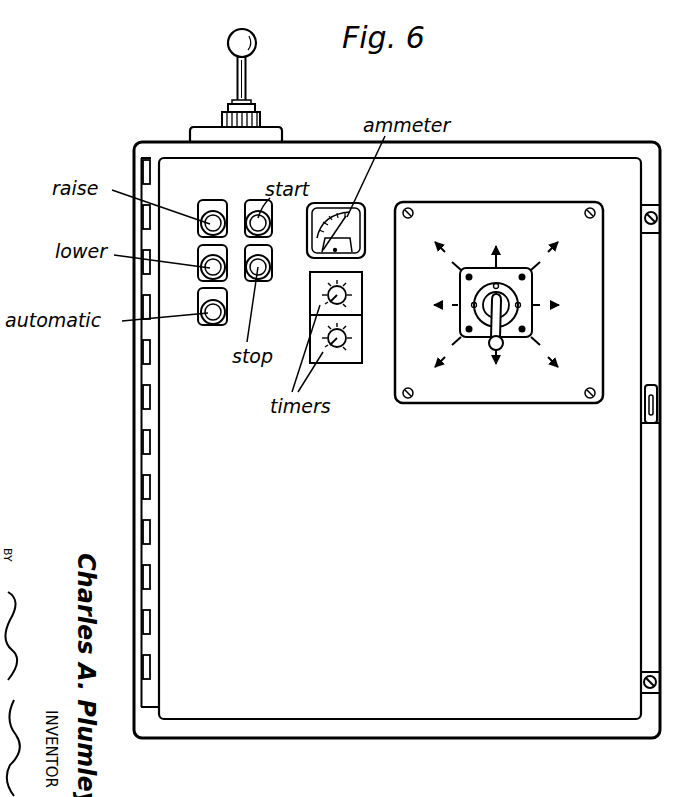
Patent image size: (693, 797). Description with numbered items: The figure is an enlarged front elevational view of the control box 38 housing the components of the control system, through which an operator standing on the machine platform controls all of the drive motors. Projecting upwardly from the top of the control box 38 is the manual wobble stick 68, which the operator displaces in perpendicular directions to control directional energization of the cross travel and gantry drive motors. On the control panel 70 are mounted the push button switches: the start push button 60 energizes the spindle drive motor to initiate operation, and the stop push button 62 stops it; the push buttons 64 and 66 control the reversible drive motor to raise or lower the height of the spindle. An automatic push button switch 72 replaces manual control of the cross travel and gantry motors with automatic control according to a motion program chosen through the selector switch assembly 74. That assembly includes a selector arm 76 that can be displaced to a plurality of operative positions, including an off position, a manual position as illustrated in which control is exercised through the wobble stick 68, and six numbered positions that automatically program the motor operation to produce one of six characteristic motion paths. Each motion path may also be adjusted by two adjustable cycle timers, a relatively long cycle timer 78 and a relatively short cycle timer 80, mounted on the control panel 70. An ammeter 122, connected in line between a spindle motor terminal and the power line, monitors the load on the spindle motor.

The control box 38 is at (565, 748).
The control panel 70 is at (185, 442).
The manual wobble stick 68 is at (246, 70).
The raise push button 64 is at (212, 222).
The start push button 60 is at (256, 218).
The lower push button 66 is at (212, 265).
The stop push button 62 is at (262, 268).
The automatic push button switch 72 is at (213, 312).
The ammeter 122 is at (362, 210).
The long cycle timer 78 is at (316, 302).
The short cycle timer 80 is at (349, 352).
The selector switch assembly 74 is at (544, 202).
The selector arm 76 is at (490, 322).